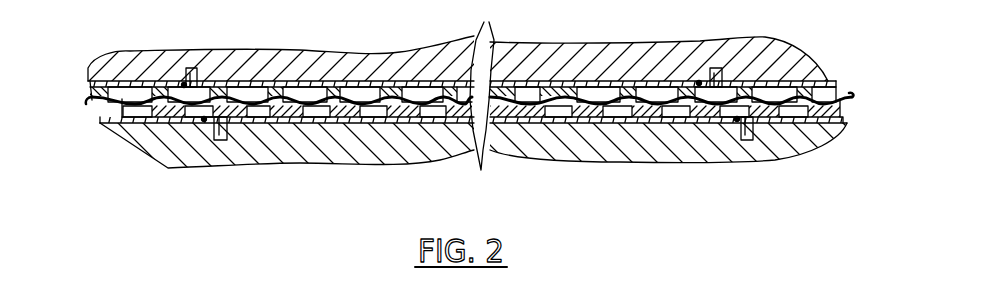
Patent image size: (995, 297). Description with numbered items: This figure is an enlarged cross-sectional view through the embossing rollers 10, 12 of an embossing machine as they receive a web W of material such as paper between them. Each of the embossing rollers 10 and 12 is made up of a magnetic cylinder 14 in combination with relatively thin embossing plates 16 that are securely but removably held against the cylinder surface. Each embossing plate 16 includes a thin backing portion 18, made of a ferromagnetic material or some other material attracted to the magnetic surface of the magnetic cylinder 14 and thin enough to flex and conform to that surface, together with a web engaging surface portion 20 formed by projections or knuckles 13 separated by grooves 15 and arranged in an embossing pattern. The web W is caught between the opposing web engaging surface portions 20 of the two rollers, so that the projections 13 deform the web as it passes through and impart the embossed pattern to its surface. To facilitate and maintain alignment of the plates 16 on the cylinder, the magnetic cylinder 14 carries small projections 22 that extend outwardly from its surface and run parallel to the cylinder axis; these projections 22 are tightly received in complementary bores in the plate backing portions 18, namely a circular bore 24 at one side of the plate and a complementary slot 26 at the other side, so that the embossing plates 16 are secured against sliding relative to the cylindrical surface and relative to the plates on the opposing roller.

The embossing roller 10 is at (447, 40).
The embossing roller 12 is at (476, 153).
The projections or knuckles 13 is at (333, 97).
The magnetic cylinder 14 is at (784, 52).
The grooves 15 is at (247, 90).
The embossing plates 16 is at (812, 81).
The backing portion 18 is at (370, 85).
The web engaging surface portion 20 is at (541, 100).
The projections 22 is at (194, 68).
The circular bore 24 is at (183, 83).
The slot 26 is at (699, 81).
The web W is at (486, 45).